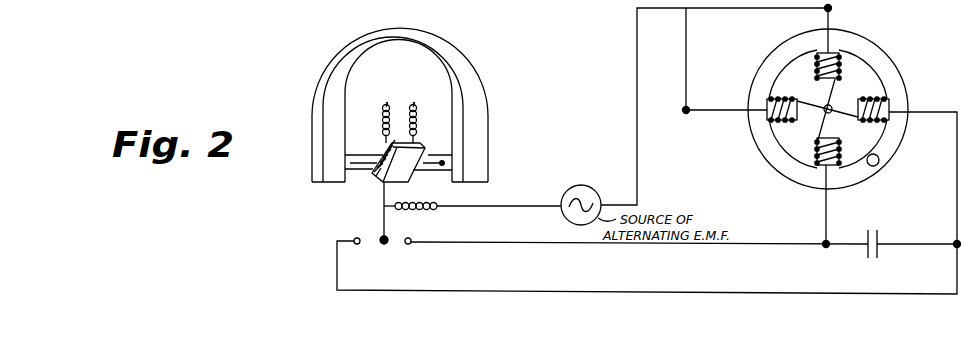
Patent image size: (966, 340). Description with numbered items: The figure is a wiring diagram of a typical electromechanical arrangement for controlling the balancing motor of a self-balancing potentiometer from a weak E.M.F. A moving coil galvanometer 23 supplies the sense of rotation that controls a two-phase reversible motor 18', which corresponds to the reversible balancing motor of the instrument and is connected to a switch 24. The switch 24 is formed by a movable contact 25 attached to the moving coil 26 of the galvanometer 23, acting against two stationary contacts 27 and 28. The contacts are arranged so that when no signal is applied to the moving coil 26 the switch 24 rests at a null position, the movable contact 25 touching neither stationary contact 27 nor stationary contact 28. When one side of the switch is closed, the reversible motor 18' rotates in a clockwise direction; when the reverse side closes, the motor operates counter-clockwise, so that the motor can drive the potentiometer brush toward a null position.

The two-phase reversible motor 18' is at (842, 114).
The moving coil galvanometer 23 is at (478, 92).
The switch 24 is at (360, 230).
The movable contact 25 is at (386, 220).
The moving coil 26 is at (419, 147).
The stationary contact 27 is at (362, 243).
The stationary contact 28 is at (411, 245).